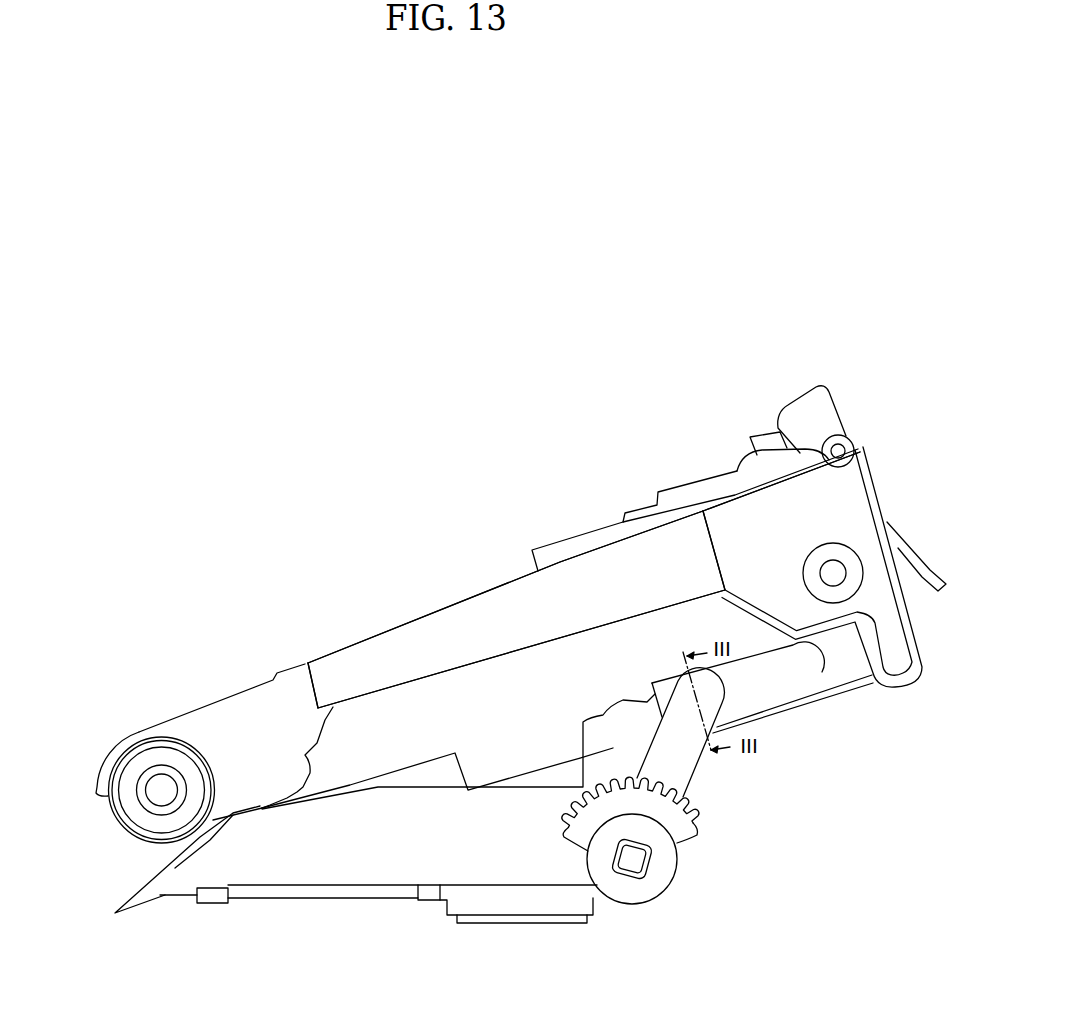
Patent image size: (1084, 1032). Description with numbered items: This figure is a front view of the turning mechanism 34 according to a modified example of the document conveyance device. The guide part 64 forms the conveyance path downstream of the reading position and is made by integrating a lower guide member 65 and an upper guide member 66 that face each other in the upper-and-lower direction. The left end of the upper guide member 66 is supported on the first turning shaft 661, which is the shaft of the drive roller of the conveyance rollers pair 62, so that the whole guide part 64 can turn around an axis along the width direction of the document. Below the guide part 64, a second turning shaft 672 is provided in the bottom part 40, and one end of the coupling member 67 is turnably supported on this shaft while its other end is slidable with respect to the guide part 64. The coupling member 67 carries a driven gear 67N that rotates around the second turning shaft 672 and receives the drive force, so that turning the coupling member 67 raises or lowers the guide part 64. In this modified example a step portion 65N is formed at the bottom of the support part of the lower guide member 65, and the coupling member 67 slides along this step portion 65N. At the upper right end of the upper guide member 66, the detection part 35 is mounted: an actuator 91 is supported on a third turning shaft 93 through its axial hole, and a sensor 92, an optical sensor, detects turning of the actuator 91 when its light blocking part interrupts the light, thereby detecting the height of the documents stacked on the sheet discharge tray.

The turning mechanism 34 is at (656, 249).
The detection part 35 is at (823, 331).
The bottom part 40 is at (407, 899).
The conveyance rollers pair 62 is at (133, 835).
The guide part 64 is at (403, 606).
The lower guide member 65 is at (333, 765).
The step portion 65N is at (820, 678).
The upper guide member 66 is at (256, 684).
The coupling member 67 is at (707, 798).
The driven gear 67N is at (686, 835).
The actuator 91 is at (828, 396).
The sensor 92 is at (755, 437).
The third turning shaft 93 is at (858, 446).
The first turning shaft 661 is at (146, 795).
The second turning shaft 672 is at (633, 882).